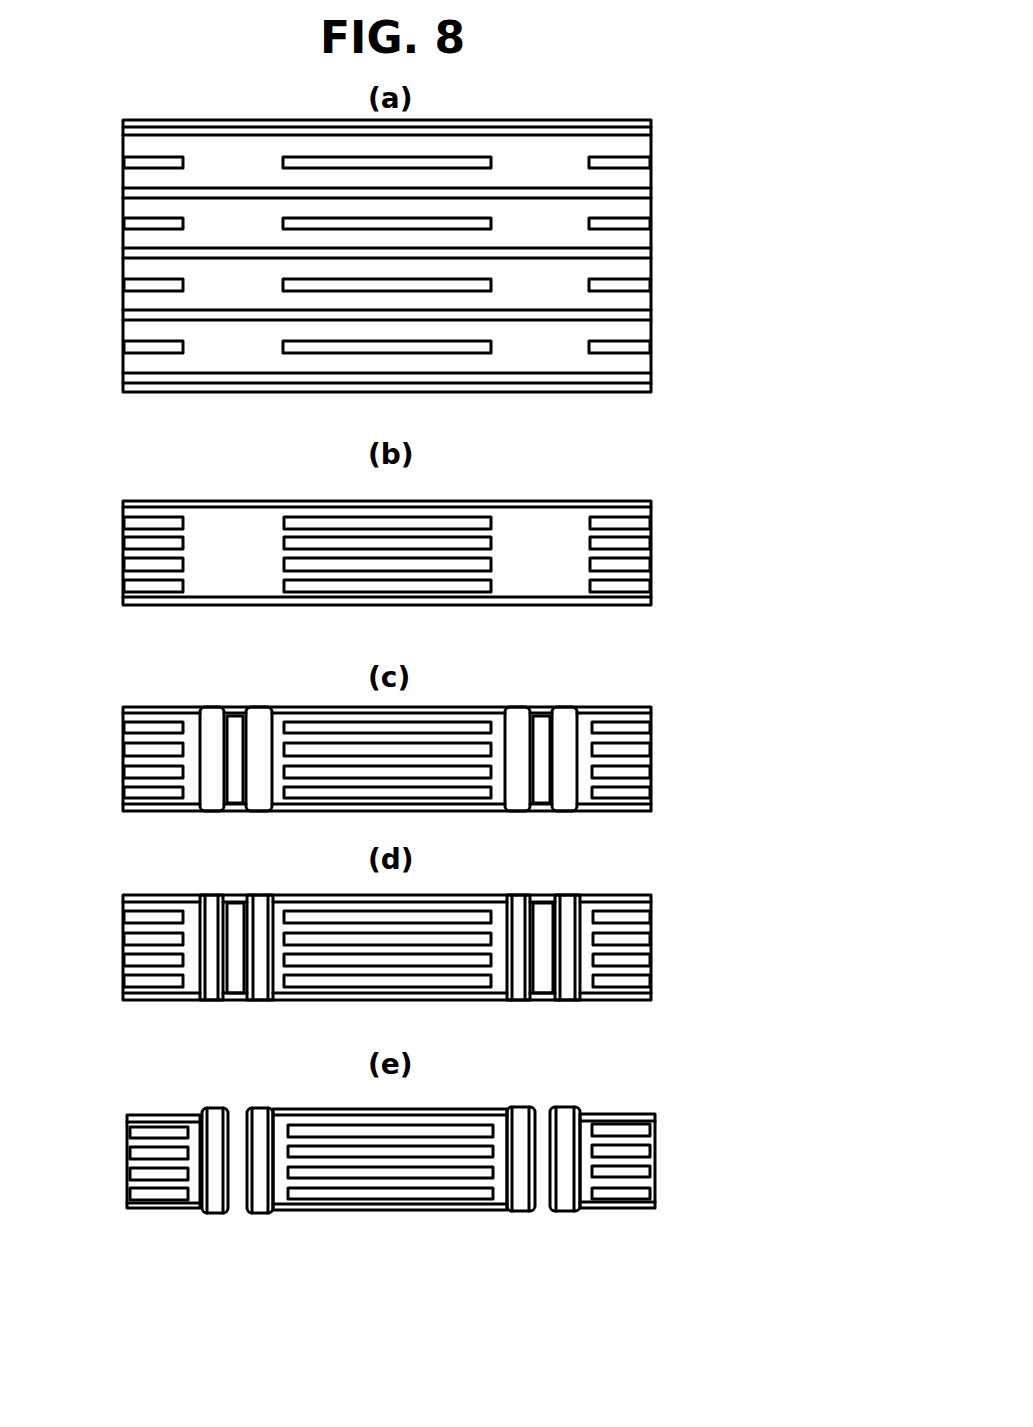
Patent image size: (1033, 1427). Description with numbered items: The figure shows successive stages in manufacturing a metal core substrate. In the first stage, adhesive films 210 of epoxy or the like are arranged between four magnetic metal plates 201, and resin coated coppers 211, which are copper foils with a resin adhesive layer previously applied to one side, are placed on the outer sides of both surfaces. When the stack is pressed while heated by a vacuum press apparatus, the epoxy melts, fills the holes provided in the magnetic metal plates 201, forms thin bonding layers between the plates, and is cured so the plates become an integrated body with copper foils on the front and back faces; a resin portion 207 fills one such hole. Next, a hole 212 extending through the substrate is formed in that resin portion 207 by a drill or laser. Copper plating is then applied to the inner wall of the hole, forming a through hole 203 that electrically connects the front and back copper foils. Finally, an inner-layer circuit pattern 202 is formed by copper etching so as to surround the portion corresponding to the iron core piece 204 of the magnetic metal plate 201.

The resin coated copper 211 is at (637, 119).
The magnetic metal plate 201 is at (651, 159).
The adhesive film 210 is at (123, 195).
The resin portion 207 is at (638, 376).
The hole 212 is at (565, 710).
The through hole 203 is at (567, 898).
The circuit pattern 202 is at (391, 1162).
The iron core piece 204 is at (463, 1170).